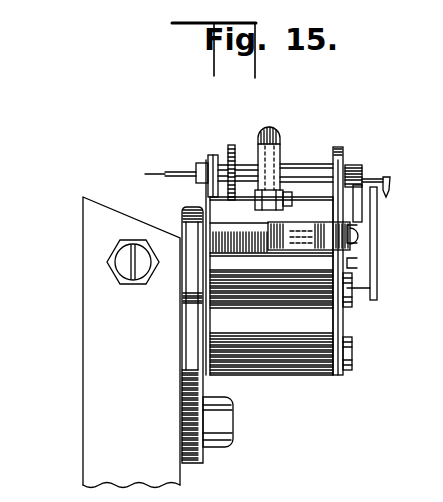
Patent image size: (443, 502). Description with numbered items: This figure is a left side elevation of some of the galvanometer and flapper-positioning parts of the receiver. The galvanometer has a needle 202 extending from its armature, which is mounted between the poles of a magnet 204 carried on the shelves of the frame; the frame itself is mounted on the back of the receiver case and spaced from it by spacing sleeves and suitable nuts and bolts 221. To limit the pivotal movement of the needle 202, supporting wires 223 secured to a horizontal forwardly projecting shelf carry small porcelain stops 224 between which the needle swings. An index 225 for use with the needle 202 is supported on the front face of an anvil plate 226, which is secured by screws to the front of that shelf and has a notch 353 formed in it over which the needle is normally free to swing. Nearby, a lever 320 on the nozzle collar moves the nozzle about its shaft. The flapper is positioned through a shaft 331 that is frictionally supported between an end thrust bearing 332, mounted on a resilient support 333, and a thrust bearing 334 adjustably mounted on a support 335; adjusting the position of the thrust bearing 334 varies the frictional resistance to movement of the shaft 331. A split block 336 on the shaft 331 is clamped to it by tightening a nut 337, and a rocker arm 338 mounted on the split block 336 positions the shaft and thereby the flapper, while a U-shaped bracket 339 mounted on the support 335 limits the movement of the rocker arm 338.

The needle 202 is at (176, 172).
The magnet 204 is at (100, 325).
The nuts and bolts 221 is at (215, 410).
The supporting wires 223 is at (282, 212).
The porcelain stops 224 is at (207, 185).
The index 225 is at (377, 237).
The anvil plate 226 is at (360, 282).
The lever 320 is at (229, 148).
The shaft 331 is at (242, 166).
The end thrust bearing 332 is at (217, 153).
The resilient support 333 is at (208, 321).
The thrust bearing 334 is at (327, 165).
The support 335 is at (342, 322).
The split block 336 is at (268, 157).
The nut 337 is at (271, 128).
The rocker arm 338 is at (290, 197).
The U-shaped bracket 339 is at (310, 238).
The notch 353 is at (362, 207).